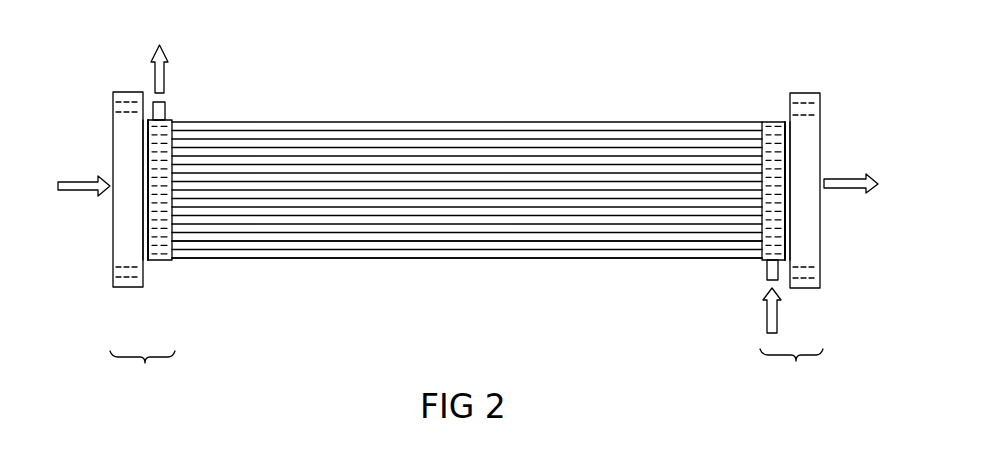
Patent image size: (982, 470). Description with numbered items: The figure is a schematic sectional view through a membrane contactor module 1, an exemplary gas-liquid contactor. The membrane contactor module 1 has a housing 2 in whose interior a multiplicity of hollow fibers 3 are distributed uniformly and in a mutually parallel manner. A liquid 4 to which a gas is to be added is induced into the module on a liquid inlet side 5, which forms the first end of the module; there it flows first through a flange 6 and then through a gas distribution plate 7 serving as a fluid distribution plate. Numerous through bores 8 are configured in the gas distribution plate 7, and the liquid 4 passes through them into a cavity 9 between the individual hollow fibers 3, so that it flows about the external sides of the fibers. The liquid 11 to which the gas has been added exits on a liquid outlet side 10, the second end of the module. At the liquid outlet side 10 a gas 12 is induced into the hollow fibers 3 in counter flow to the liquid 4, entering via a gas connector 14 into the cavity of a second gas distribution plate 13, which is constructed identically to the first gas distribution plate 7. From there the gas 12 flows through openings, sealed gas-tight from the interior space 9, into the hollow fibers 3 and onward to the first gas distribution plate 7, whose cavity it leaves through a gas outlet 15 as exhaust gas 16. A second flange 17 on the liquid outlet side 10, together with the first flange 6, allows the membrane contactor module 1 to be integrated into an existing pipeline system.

The membrane contactor module 1 is at (533, 93).
The housing 2 is at (487, 262).
The hollow fibers 3 is at (388, 127).
The liquid 4 is at (82, 191).
The liquid inlet side 5 is at (142, 372).
The flange 6 is at (120, 137).
The gas distribution plate 7 is at (155, 262).
The through bores 8 is at (173, 123).
The cavity 9 is at (305, 246).
The liquid outlet side 10 is at (791, 371).
The liquid to which the gas has been added 11 is at (845, 190).
The gas 12 is at (768, 322).
The second gas distribution plate 13 is at (777, 122).
The gas connector 14 is at (766, 274).
The gas outlet 15 is at (163, 126).
The exhaust gas 16 is at (158, 75).
The second flange 17 is at (808, 135).